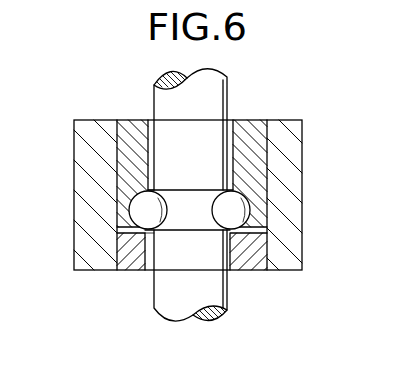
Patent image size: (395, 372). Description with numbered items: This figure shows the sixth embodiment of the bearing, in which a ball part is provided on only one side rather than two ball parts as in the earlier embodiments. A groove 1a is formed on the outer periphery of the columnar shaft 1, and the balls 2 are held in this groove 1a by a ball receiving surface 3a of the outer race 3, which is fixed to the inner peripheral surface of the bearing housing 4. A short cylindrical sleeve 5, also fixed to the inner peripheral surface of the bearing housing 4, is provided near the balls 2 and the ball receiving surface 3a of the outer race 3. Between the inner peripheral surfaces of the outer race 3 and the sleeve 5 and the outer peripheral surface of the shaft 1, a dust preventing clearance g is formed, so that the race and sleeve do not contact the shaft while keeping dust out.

The columnar shaft 1 is at (228, 102).
The groove 1a is at (166, 212).
The balls 2 is at (161, 194).
The outer race 3 is at (128, 119).
The ball receiving surface 3a is at (128, 228).
The bearing housing 4 is at (82, 168).
The short cylindrical sleeve 5 is at (125, 268).
The dust preventing clearance g is at (151, 118).